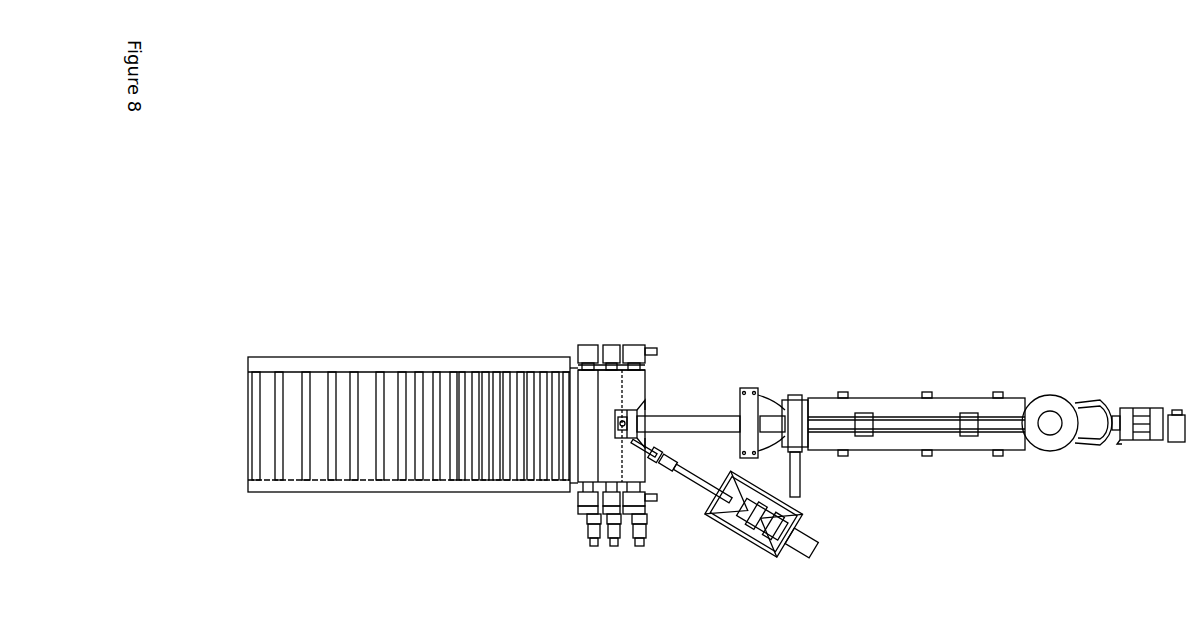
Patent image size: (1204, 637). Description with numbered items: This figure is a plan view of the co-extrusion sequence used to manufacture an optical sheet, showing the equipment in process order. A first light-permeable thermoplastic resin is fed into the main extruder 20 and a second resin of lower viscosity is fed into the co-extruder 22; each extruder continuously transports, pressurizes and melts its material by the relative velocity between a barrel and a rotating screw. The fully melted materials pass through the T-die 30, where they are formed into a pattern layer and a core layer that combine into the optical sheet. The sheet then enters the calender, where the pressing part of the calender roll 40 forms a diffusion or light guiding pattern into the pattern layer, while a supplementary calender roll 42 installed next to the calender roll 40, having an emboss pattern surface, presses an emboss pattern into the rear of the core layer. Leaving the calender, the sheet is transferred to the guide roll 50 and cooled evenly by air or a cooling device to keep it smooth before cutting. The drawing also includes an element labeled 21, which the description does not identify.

The main extruder 20 is at (900, 455).
The drive wheel 21 is at (1052, 443).
The co-extruder 22 is at (752, 547).
The T-die 30 is at (612, 426).
The calender roll 40 is at (610, 375).
The supplementary calender roll 42 is at (644, 386).
The guide roll 50 is at (390, 497).